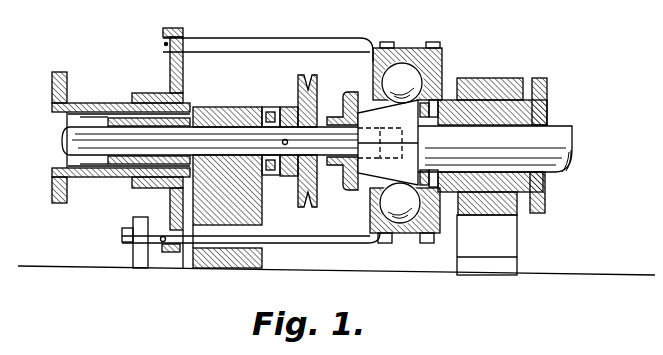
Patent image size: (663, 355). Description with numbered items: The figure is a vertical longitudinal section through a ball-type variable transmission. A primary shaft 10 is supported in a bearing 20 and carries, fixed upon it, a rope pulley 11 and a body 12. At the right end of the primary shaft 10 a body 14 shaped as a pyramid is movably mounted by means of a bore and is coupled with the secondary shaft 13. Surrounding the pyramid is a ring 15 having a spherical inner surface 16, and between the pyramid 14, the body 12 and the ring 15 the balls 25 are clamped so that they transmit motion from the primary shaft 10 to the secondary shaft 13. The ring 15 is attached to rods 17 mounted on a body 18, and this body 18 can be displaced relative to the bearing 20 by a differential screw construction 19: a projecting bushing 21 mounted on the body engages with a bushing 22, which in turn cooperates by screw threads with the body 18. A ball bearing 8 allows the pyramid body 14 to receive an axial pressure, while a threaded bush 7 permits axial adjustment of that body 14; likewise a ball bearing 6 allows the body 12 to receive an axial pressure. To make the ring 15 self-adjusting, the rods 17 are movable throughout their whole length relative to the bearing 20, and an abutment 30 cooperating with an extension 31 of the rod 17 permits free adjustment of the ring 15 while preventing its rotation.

The ball bearing 6 is at (269, 115).
The threaded bush 7 is at (544, 99).
The ball bearing 8 is at (433, 241).
The primary shaft 10 is at (104, 132).
The rope pulley 11 is at (304, 80).
The body 12 is at (359, 92).
The secondary shaft 13 is at (553, 135).
The pyramid body 14 is at (481, 99).
The ring 15 is at (421, 45).
The spherical inner surface 16 is at (403, 118).
The rods 17 is at (278, 47).
The body 18 is at (174, 78).
The differential screw construction 19 is at (126, 76).
The bearing 20 is at (231, 115).
The projecting bushing 21 is at (135, 162).
The bushing 22 is at (60, 73).
The balls 25 is at (403, 78).
The abutment 30 is at (140, 255).
The extension 31 is at (122, 234).